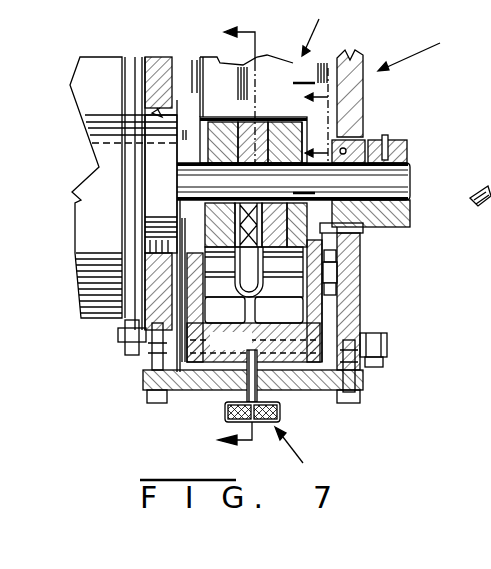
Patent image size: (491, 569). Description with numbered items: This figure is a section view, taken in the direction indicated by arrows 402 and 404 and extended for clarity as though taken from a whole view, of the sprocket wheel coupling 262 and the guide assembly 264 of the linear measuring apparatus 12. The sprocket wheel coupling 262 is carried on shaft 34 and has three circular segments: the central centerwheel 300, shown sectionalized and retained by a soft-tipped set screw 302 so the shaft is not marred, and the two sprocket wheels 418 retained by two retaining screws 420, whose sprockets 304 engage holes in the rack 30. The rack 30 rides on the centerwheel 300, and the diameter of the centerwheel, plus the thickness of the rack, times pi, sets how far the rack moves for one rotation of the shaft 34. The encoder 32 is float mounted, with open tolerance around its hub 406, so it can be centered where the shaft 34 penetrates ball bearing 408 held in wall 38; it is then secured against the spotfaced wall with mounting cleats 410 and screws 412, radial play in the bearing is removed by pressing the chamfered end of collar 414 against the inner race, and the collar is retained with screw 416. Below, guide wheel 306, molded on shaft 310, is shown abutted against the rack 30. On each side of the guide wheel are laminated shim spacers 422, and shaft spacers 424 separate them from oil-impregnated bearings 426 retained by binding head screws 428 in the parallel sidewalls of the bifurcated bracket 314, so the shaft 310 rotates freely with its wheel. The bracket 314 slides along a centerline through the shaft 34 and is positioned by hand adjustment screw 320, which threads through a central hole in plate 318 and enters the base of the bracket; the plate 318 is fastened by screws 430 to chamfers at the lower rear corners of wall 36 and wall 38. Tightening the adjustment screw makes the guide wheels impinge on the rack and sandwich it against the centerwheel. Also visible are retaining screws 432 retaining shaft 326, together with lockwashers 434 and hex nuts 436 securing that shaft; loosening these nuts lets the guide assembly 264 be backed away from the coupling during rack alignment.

The prosthesis assembly 12 is at (409, 53).
The rack 30 is at (275, 119).
The encoder 32 is at (83, 57).
The shaft 34 is at (415, 182).
The wall 36 is at (152, 57).
The wall 38 is at (357, 72).
The sprocket wheel coupling 262 is at (319, 98).
The guide assembly 264 is at (306, 450).
The centerwheel 300 is at (260, 115).
The set screw 302 is at (355, 233).
The sprockets 304 is at (215, 117).
The guide wheel 306 is at (213, 343).
The shaft 310 is at (338, 262).
The bifurcated bracket 314 is at (285, 393).
The plate 318 is at (217, 392).
The hand adjustment screw 320 is at (225, 420).
The shaft 326 is at (388, 343).
The arrow 402 is at (224, 32).
The arrow 404 is at (223, 440).
The hub 406 is at (161, 65).
The ball bearing 408 is at (361, 132).
The mounting cleats 410 is at (120, 337).
The screws 412 is at (120, 328).
The collar 414 is at (406, 156).
The screw 416 is at (387, 136).
The sprocket wheels 418 is at (220, 117).
The retaining screws 420 is at (336, 257).
The laminated shim spacers 422 is at (225, 310).
The shaft spacers 424 is at (279, 310).
The oil-impregnated bearings 426 is at (342, 288).
The binding head screws 428 is at (341, 290).
The screws 430 is at (144, 392).
The retaining screws 432 is at (315, 386).
The lockwashers 434 is at (356, 358).
The hex nuts 436 is at (384, 358).